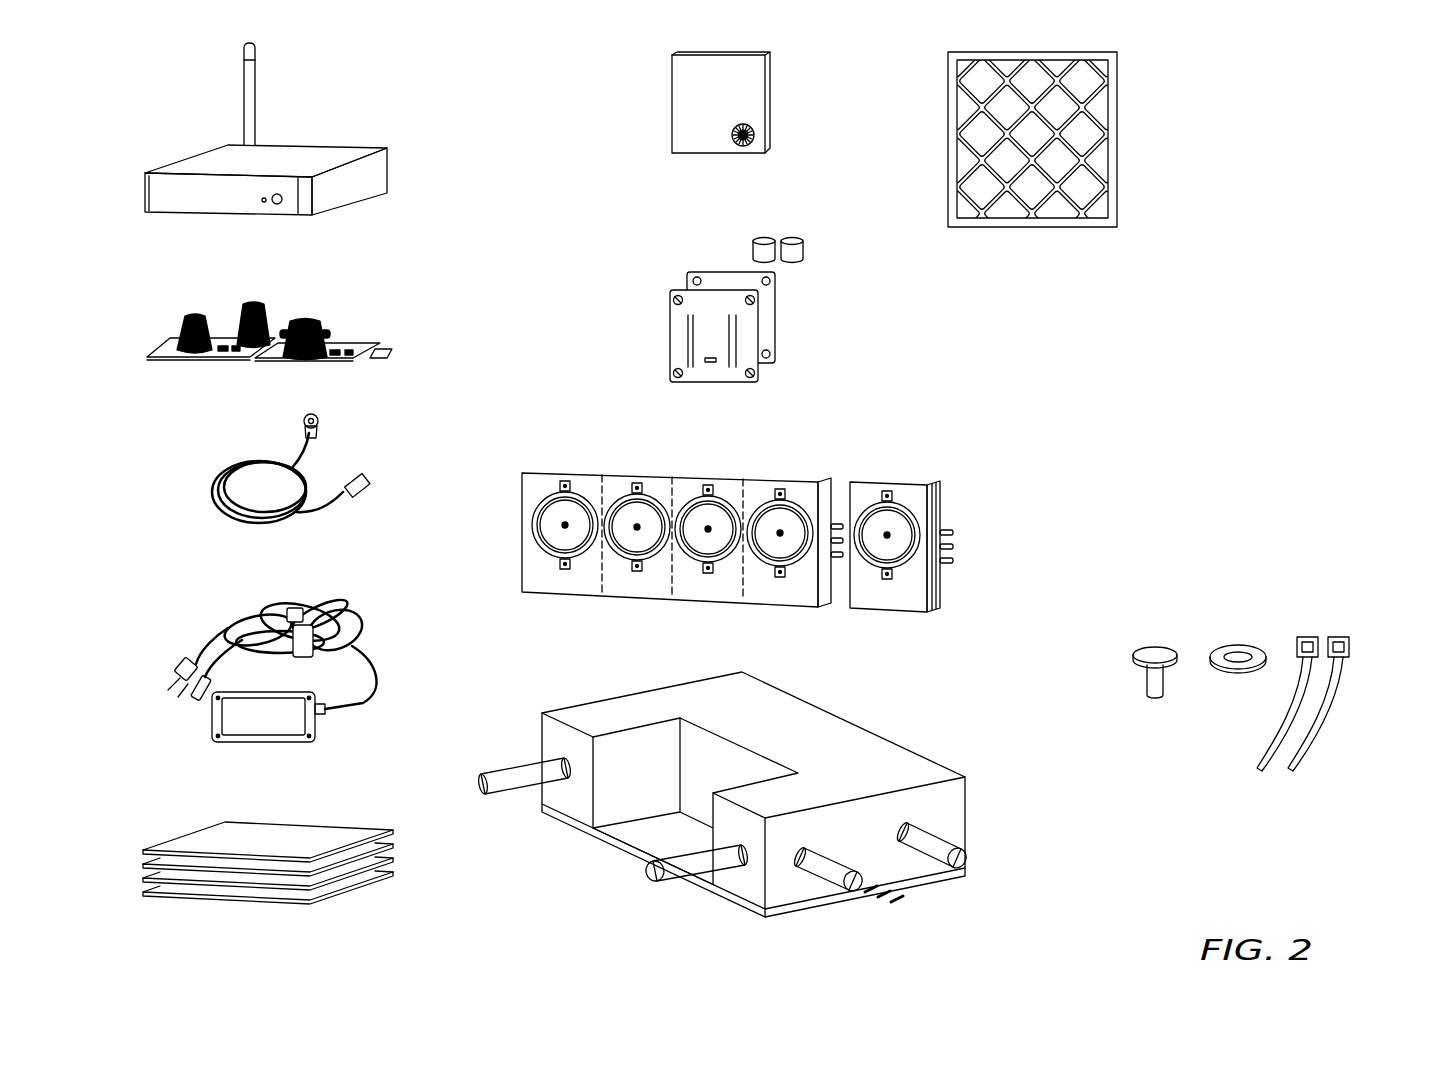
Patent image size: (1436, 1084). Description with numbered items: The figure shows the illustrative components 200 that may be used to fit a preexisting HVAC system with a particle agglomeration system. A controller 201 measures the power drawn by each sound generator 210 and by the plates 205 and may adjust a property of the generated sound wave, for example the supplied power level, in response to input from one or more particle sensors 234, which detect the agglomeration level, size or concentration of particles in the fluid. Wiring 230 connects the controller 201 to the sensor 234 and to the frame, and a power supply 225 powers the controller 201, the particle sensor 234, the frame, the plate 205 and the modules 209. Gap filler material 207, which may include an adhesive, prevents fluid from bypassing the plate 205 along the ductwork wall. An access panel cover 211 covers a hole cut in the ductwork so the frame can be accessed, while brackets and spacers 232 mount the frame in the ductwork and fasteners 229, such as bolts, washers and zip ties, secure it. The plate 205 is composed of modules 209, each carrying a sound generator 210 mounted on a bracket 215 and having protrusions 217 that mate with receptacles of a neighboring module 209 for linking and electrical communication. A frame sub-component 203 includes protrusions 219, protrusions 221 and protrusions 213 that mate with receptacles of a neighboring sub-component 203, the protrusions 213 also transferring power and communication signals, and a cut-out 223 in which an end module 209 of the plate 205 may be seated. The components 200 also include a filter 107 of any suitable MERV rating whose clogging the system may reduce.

The components 200 is at (1347, 191).
The controller 201 is at (320, 147).
The particle sensor 234 is at (150, 300).
The wiring 230 is at (213, 486).
The power supply 225 is at (210, 716).
The adhesive gap filler 207 is at (143, 950).
The access panel cover 211 is at (771, 97).
The brackets and/or spacers 232 is at (808, 233).
The filter 107 is at (1120, 97).
The plate 205 is at (522, 468).
The module 209 is at (950, 532).
The bracket 215 is at (922, 492).
The protrusions 217 is at (957, 523).
The sound generator 210 is at (893, 553).
The sub-component 203 is at (748, 816).
The cut-out 223 is at (613, 748).
The protrusions 221 is at (481, 795).
The protrusions 219 is at (912, 835).
The protrusions 213 is at (863, 910).
The fasteners 229 is at (1350, 622).